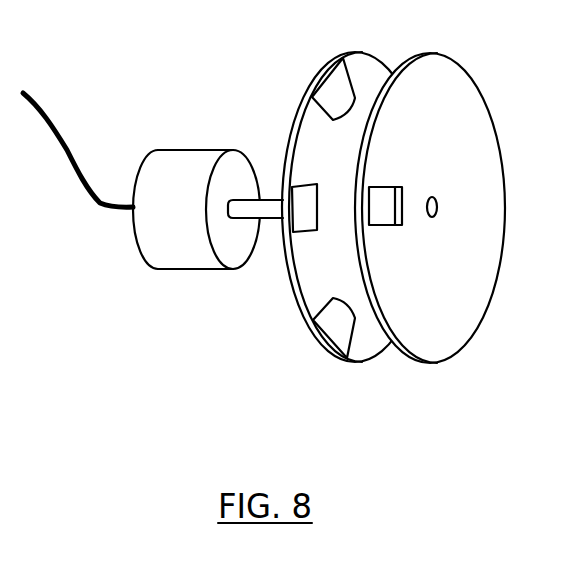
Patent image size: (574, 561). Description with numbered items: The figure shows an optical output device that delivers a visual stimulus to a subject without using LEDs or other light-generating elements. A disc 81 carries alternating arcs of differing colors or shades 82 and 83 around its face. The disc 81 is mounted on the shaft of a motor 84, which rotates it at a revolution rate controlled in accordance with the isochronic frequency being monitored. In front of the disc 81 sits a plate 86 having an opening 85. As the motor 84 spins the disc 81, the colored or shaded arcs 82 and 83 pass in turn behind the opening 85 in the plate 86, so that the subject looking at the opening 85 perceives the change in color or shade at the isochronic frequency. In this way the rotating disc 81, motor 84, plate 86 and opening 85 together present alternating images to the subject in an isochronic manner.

The disc 81 is at (401, 229).
The arc of differing color or shade 82 is at (332, 78).
The arc of differing color or shade 83 is at (337, 192).
The motor 84 is at (180, 257).
The opening 85 is at (385, 212).
The plate 86 is at (483, 202).